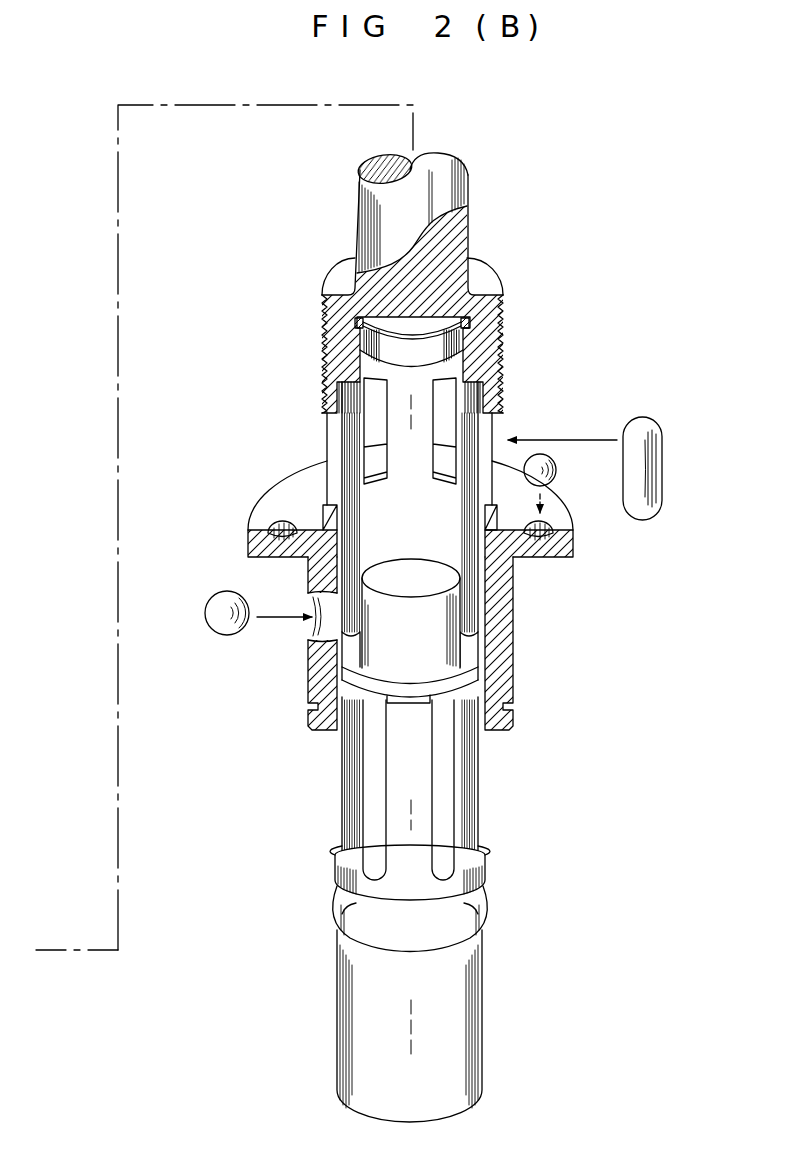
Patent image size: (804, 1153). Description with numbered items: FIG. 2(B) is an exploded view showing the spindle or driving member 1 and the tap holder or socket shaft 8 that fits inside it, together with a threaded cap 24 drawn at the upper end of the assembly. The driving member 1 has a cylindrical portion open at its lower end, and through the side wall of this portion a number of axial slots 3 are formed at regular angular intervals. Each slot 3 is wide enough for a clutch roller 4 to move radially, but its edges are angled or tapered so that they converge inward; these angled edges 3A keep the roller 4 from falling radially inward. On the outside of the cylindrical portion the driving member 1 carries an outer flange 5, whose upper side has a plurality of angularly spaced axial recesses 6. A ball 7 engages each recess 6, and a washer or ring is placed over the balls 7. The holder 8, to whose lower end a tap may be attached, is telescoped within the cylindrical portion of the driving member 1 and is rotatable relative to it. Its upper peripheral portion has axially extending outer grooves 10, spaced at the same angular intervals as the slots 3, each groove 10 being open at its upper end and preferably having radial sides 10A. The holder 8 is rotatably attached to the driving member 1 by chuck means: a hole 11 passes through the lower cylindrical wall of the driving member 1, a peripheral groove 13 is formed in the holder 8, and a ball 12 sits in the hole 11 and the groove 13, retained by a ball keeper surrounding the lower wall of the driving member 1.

The spindle or driving member 1 is at (497, 650).
The axial slot 3 is at (333, 503).
The angled edges 3A is at (493, 430).
The clutch roller 4 is at (664, 468).
The outer flange 5 is at (556, 548).
The axial recess 6 is at (548, 526).
The ball 7 is at (557, 470).
The tap holder or socket shaft 8 is at (417, 1041).
The outer groove 10 is at (440, 760).
The radial sides 10A is at (367, 752).
The hole 11 is at (322, 625).
The ball 12 is at (208, 636).
The peripheral groove 13 is at (463, 920).
The threaded cap 24 is at (505, 348).